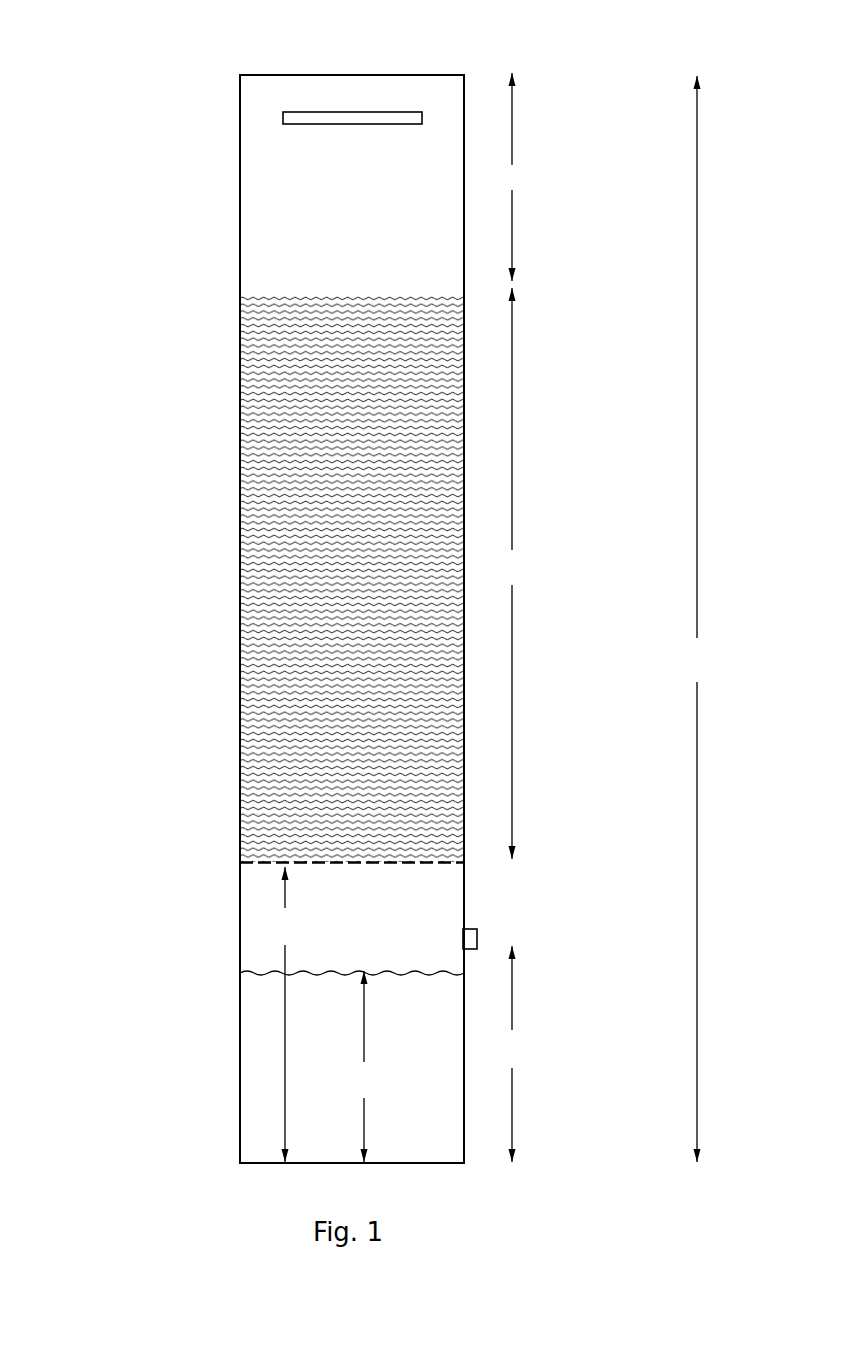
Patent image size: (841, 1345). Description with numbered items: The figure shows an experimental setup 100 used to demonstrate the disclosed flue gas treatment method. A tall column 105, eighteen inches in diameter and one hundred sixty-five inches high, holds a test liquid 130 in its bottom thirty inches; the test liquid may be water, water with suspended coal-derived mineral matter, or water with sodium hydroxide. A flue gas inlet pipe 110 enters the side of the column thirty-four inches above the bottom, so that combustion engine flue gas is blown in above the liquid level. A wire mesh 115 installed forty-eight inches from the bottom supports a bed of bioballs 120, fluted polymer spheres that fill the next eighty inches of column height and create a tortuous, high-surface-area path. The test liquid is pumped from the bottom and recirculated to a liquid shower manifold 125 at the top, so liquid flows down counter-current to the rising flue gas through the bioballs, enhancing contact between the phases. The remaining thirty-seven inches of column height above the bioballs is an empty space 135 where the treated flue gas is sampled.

The experimental setup 100 is at (137, 56).
The column 105 is at (238, 373).
The flue gas inlet pipe 110 is at (476, 931).
The wire mesh 115 is at (248, 866).
The bioballs 120 is at (265, 575).
The liquid shower manifold 125 is at (283, 118).
The test liquid 130 is at (252, 1068).
The empty space 135 is at (352, 185).